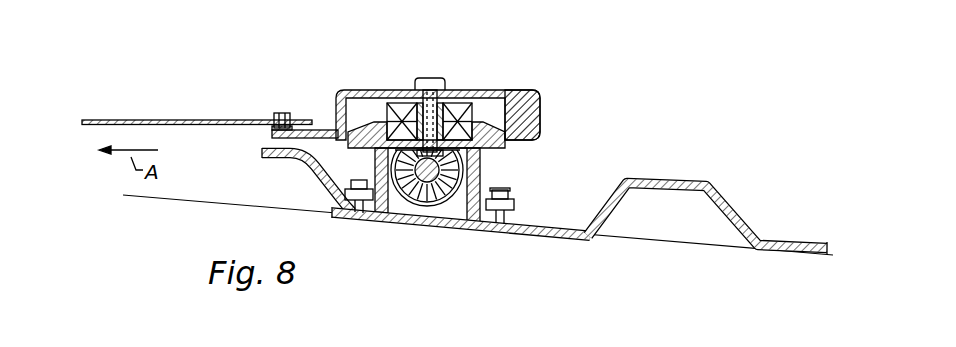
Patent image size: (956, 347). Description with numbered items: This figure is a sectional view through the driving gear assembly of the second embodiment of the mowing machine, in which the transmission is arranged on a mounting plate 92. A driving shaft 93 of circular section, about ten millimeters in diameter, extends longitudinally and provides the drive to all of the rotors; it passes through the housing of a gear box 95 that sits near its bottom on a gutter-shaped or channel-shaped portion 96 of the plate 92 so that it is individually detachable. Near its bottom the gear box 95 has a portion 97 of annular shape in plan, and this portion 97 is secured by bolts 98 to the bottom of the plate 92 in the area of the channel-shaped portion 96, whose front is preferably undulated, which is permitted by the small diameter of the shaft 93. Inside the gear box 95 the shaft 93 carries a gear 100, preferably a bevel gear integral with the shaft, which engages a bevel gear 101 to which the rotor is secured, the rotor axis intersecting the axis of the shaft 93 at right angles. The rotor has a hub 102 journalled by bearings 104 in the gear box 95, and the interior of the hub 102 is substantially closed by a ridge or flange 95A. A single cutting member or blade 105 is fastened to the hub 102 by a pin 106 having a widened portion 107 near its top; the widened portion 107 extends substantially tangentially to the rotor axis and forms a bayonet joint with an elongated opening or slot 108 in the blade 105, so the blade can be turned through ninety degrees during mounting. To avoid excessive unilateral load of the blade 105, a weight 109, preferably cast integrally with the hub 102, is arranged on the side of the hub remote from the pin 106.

The mounting plate 92 is at (622, 182).
The driving shaft 93 is at (392, 158).
The gear box 95 is at (481, 175).
The ridge or flange 95A is at (486, 120).
The gutter-shaped or channel-shaped portion 96 is at (460, 219).
The annular portion 97 is at (512, 210).
The bolts 98 is at (347, 218).
The gear 100 is at (406, 214).
The bevel gear 101 is at (458, 152).
The rotor hub 102 is at (358, 88).
The bearings 104 is at (388, 89).
The cutting member or blade 105 is at (196, 121).
The pin 106 is at (284, 115).
The widened portion 107 is at (273, 119).
The elongated opening or slot 108 is at (266, 128).
The weight 109 is at (537, 106).